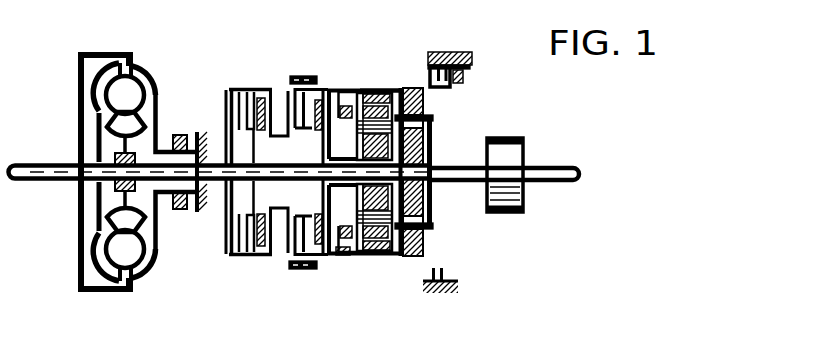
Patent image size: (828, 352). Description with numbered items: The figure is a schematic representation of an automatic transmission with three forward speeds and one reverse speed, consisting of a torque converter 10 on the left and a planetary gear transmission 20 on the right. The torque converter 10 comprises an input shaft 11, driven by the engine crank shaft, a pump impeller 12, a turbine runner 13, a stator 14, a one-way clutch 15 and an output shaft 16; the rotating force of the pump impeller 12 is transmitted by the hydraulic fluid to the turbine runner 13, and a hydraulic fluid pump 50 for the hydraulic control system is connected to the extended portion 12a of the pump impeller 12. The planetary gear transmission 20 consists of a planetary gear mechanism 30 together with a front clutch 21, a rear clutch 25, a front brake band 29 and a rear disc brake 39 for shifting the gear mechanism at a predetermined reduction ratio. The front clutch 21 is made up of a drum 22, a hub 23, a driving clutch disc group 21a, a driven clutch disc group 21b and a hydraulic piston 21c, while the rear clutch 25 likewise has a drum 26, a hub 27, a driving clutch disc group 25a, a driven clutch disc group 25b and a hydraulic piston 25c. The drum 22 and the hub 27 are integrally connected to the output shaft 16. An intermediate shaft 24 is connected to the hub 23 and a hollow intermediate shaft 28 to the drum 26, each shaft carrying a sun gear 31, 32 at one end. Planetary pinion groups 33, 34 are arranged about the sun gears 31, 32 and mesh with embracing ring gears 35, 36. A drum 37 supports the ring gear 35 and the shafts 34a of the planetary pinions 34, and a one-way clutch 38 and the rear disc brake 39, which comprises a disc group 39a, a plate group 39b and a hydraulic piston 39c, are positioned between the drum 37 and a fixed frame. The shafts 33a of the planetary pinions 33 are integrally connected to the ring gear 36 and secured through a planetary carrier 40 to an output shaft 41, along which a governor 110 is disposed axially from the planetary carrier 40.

The torque converter 10 is at (125, 35).
The input shaft 11 is at (40, 162).
The pump impeller 12 is at (139, 74).
The extended portion of the pump impeller 12a is at (163, 150).
The turbine runner 13 is at (97, 93).
The stator 14 is at (131, 120).
The one-way clutch 15 is at (113, 160).
The output shaft 16 is at (103, 185).
The planetary gear transmission 20 is at (365, 17).
The front clutch 21 is at (225, 93).
The driving clutch disc group 21a is at (245, 90).
The driven clutch disc group 21b is at (251, 257).
The hydraulic piston 21c is at (262, 97).
The drum 22 is at (238, 89).
The hub 23 is at (235, 205).
The intermediate shaft 24 is at (262, 183).
The rear clutch 25 is at (318, 97).
The driving clutch disc group 25a is at (290, 252).
The driven clutch disc group 25b is at (307, 270).
The hydraulic piston 25c is at (324, 256).
The drum 26 is at (333, 86).
The hub 27 is at (306, 138).
The hollow intermediate shaft 28 is at (338, 192).
The front brake band 29 is at (312, 74).
The planetary gear mechanism 30 is at (388, 88).
The sun gear 31 is at (433, 181).
The sun gear 32 is at (359, 129).
The planetary pinion group 33 is at (430, 120).
The shafts for the planetary pinions 33a is at (440, 150).
The planetary pinion group 34 is at (381, 254).
The shafts for the planetary pinions 34a is at (351, 255).
The ring gear 35 is at (432, 92).
The ring gear 36 is at (393, 92).
The drum 37 is at (380, 88).
The one-way clutch 38 is at (341, 240).
The rear disc brake 39 is at (465, 76).
The disc group 39a is at (468, 58).
The plate group 39b is at (432, 56).
The hydraulic piston 39c is at (462, 88).
The planetary carrier 40 is at (426, 218).
The output shaft 41 is at (475, 184).
The hydraulic fluid pump 50 is at (177, 220).
The governor 110 is at (515, 138).